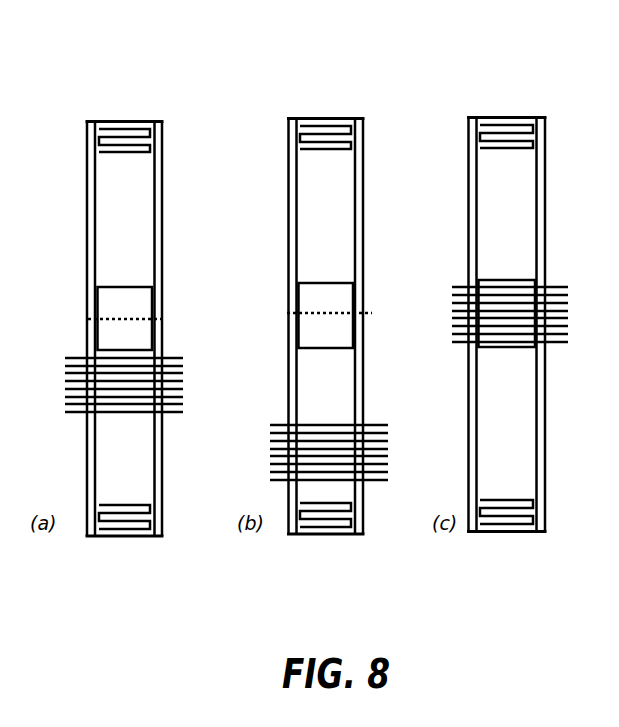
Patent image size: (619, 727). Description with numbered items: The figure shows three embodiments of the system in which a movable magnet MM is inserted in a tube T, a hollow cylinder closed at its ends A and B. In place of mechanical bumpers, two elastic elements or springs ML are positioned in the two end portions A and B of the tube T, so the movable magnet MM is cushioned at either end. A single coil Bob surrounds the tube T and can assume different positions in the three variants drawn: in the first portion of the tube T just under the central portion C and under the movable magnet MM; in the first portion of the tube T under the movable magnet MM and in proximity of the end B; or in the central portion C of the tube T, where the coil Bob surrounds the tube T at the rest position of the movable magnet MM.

The end of tube A is at (115, 109).
The end of tube B is at (127, 546).
The tube T is at (103, 231).
The elastic elements or springs ML is at (145, 128).
The movable magnet MM is at (108, 294).
The central portion of the tube C is at (160, 323).
The coil Bob is at (111, 390).